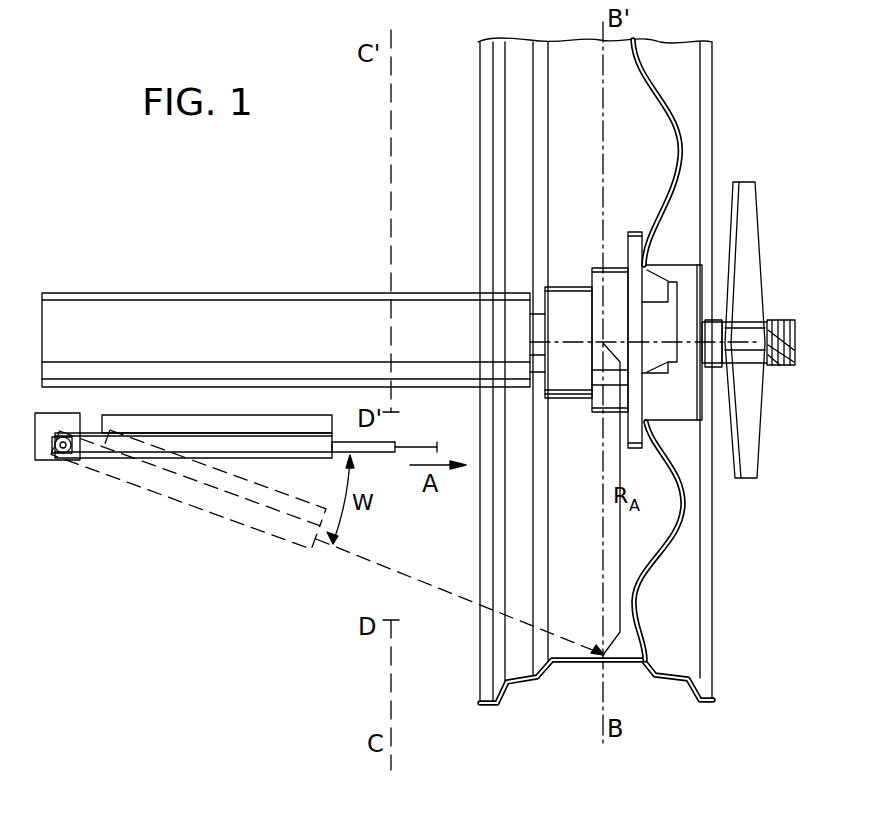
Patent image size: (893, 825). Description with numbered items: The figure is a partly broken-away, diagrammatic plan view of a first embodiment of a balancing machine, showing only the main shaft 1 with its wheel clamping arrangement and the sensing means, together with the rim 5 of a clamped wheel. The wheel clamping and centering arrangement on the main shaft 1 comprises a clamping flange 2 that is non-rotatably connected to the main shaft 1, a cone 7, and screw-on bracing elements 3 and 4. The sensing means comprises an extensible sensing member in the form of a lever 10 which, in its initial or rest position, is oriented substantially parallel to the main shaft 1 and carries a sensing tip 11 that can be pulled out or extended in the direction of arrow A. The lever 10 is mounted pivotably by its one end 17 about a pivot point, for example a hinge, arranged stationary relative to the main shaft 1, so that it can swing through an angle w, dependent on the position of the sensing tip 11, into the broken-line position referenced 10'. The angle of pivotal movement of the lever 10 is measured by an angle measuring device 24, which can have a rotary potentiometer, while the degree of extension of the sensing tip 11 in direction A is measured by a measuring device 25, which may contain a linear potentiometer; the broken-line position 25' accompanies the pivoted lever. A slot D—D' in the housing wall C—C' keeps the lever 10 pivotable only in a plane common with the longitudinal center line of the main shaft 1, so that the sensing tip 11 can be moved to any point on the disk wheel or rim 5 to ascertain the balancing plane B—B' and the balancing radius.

The main shaft 1 is at (217, 327).
The clamping flange 2 is at (630, 222).
The screw-on bracing element 3 is at (687, 291).
The screw-on bracing element 4 is at (748, 228).
The wheel rim 5 is at (680, 153).
The cone 7 is at (652, 318).
The lever 10 is at (193, 467).
The sensing tip 11 is at (437, 447).
The end of the lever 17 is at (64, 462).
The angle measuring device 24 is at (36, 470).
The measuring device 25 is at (217, 412).
The guide plate in pivoted position 25' is at (215, 499).
The lever in pivoted position 10' is at (327, 543).